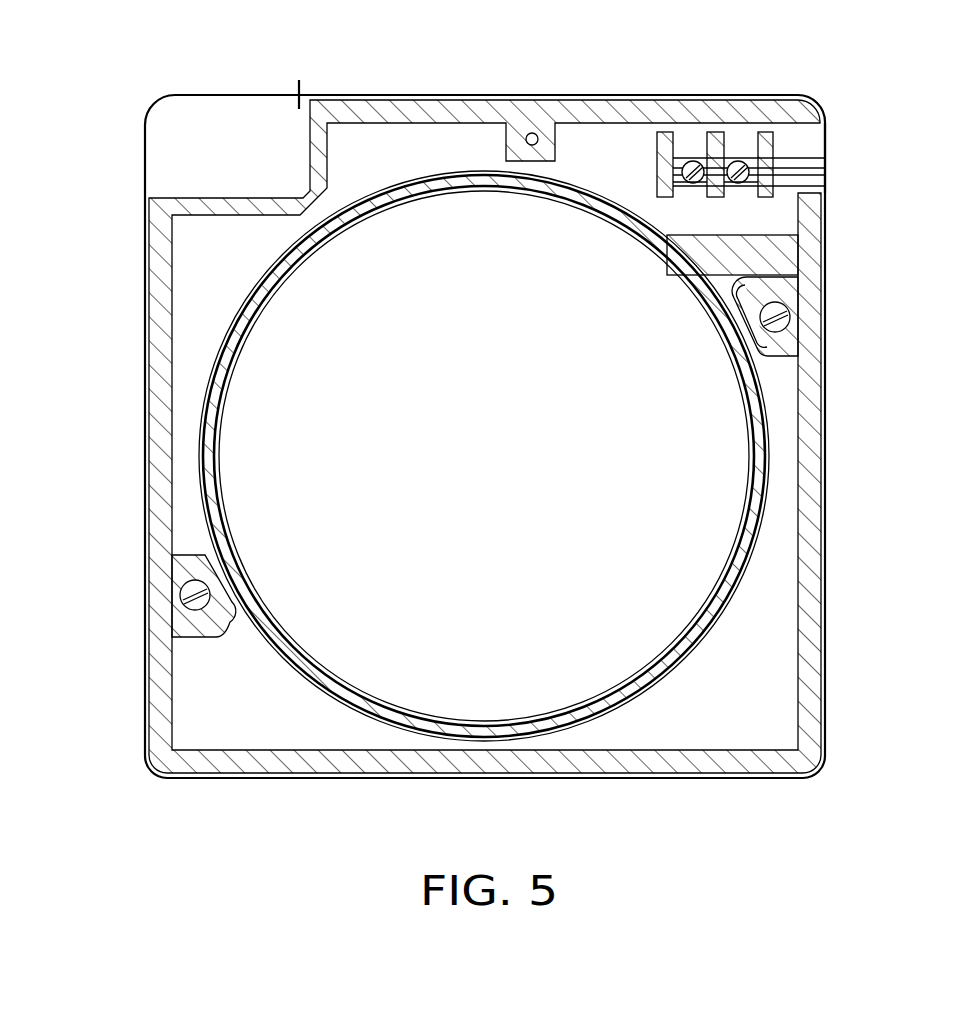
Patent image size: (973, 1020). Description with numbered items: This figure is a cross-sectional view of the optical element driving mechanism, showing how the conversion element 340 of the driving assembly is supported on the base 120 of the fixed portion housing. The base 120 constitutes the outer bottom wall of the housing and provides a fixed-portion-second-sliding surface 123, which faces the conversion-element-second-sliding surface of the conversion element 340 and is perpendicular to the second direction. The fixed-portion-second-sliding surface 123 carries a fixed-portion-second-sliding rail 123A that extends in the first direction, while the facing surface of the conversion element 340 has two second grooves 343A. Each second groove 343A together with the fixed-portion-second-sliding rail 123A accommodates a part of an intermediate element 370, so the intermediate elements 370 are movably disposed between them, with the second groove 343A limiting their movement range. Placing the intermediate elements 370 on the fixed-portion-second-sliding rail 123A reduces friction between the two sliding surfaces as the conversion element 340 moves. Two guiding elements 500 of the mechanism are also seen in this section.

The base 120 is at (810, 365).
The fixed-portion-second-sliding surface 123 is at (813, 138).
The fixed-portion-second-sliding rail 123A is at (813, 172).
The conversion element 340 is at (770, 146).
The second groove 343A is at (677, 183).
The intermediate element 370 is at (738, 160).
The guiding element 500 is at (789, 320).